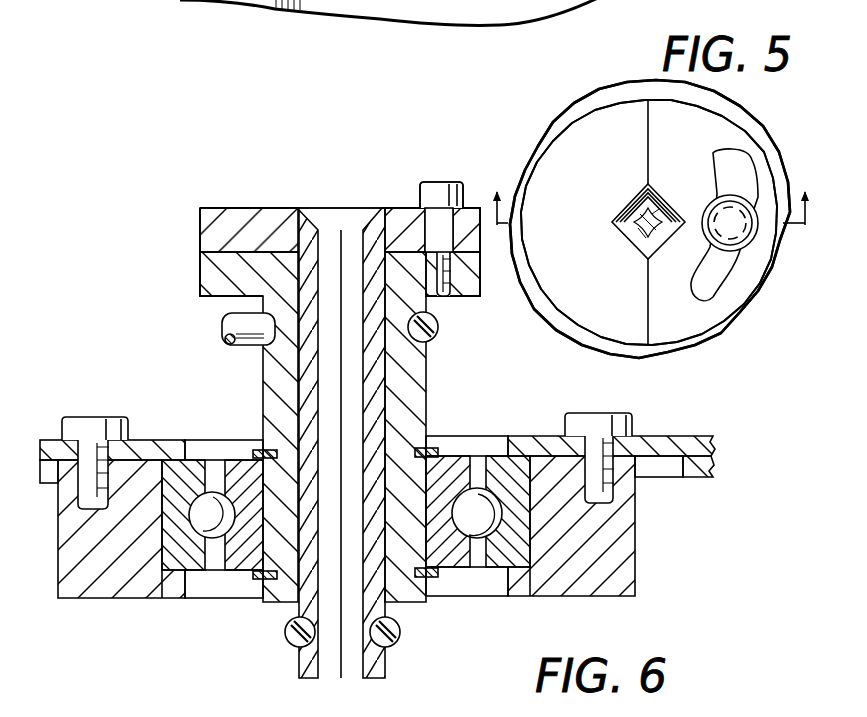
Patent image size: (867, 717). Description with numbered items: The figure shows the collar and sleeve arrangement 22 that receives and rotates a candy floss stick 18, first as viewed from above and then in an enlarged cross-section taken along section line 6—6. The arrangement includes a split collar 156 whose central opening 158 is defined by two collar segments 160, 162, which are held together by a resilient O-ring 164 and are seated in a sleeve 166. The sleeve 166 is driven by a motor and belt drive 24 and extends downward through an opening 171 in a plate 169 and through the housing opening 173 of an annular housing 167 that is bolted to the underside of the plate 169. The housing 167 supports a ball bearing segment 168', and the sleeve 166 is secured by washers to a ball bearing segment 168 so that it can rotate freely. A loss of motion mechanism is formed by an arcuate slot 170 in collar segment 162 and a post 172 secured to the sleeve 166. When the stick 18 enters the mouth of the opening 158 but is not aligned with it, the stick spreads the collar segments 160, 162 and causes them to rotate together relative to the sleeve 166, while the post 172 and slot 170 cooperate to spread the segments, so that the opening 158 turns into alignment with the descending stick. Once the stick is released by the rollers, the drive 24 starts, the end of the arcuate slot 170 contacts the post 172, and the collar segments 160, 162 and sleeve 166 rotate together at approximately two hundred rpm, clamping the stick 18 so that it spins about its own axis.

In FIG. 5, the stick 18 is at (643, 232).
In FIG. 6, the collar and sleeve arrangement 22 is at (231, 182).
In FIG. 5, the collar and sleeve arrangement 22 is at (744, 334).
In FIG. 6, the motor and belt drive 24 is at (216, 328).
In FIG. 6, the split collar 156 is at (196, 206).
In FIG. 5, the split collar 156 is at (633, 90).
In FIG. 6, the central opening 158 is at (333, 242).
In FIG. 5, the central opening 158 is at (637, 198).
In FIG. 6, the collar segment 160 is at (200, 240).
In FIG. 5, the collar segment 160 is at (592, 315).
In FIG. 6, the collar segment 162 is at (473, 207).
In FIG. 5, the collar segment 162 is at (680, 322).
In FIG. 6, the resilient O-ring 164 is at (401, 641).
In FIG. 6, the sleeve 166 is at (412, 385).
In FIG. 6, the annular housing 167 is at (107, 585).
In FIG. 6, the ball bearing segment 168 is at (219, 545).
In FIG. 6, the ball bearing segment 168' is at (483, 540).
In FIG. 6, the plate 169 is at (147, 436).
In FIG. 6, the arcuate slot 170 is at (422, 216).
In FIG. 5, the arcuate slot 170 is at (723, 166).
In FIG. 6, the opening 171 is at (200, 452).
In FIG. 6, the post 172 is at (448, 184).
In FIG. 5, the post 172 is at (737, 205).
In FIG. 6, the housing opening 173 is at (203, 587).
In FIG. 5, the section line 6- 6 is at (654, 223).